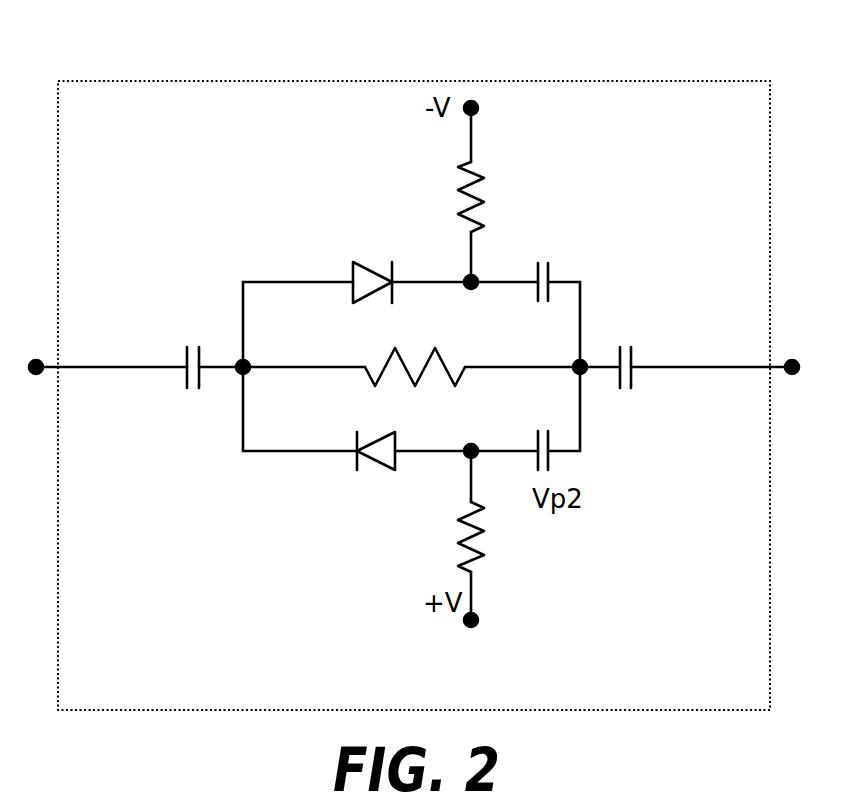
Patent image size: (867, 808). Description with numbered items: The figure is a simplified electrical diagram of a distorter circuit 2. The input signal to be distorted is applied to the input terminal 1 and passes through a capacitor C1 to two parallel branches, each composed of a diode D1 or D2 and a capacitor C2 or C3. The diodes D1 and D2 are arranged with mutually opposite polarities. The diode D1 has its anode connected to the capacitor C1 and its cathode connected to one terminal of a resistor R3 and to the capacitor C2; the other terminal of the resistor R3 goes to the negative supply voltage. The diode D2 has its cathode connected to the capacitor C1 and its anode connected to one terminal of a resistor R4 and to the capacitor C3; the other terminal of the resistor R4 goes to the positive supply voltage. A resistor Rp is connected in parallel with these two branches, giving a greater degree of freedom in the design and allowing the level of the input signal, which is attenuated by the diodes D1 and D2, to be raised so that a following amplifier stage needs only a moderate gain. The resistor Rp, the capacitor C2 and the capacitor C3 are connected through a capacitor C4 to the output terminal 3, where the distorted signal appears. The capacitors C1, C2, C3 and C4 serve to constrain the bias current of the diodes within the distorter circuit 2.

The input terminal 1 is at (50, 361).
The distorter circuit 2 is at (378, 81).
The output terminal 3 is at (778, 362).
The capacitor C1 is at (210, 347).
The capacitor C2 is at (552, 261).
The capacitor C3 is at (545, 428).
The capacitor C4 is at (610, 344).
The diode D1 is at (390, 261).
The diode D2 is at (390, 473).
The resistor R3 is at (493, 195).
The resistor R4 is at (494, 535).
The resistor Rp is at (411, 346).